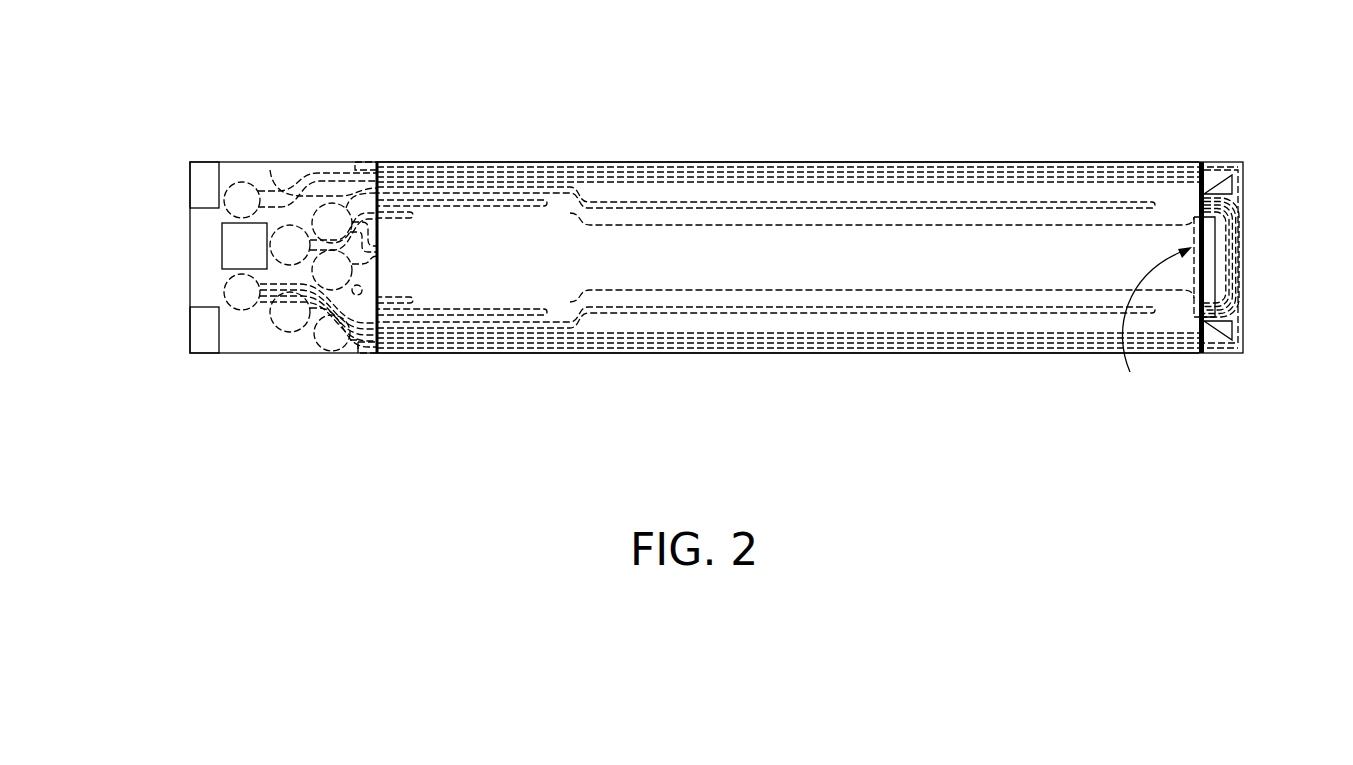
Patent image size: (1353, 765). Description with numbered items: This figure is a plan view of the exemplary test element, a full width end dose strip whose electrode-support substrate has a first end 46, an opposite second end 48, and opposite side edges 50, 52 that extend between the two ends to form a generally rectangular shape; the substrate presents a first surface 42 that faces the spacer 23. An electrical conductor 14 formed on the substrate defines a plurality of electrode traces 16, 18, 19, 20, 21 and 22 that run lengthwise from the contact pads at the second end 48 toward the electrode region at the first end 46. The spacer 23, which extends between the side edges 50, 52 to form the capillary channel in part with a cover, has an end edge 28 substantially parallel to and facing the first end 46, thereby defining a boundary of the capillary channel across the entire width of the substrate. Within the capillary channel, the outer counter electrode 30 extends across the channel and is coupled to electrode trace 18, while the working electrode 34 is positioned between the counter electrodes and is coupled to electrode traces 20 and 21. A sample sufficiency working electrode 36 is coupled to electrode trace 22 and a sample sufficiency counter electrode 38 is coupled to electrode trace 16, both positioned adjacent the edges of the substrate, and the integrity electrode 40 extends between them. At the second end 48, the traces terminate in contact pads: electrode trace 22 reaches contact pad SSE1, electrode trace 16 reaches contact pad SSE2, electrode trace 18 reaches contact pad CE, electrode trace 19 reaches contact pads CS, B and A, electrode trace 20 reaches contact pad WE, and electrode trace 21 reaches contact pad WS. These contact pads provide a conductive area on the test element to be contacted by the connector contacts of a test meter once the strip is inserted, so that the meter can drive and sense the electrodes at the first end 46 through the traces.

The electrical conductor 14 is at (763, 192).
The electrode trace 16 is at (1043, 363).
The electrode trace 18 is at (993, 352).
The electrode trace 19 is at (928, 330).
The electrode trace 20 is at (917, 204).
The electrode trace 21 is at (997, 180).
The electrode trace 22 is at (1074, 163).
The spacer 23 is at (1157, 324).
The end edge 28 is at (1205, 168).
The outer counter electrode 30 is at (1240, 243).
The working electrode 34 is at (1238, 262).
The sample sufficiency working electrode (SSWE) 36 is at (1243, 178).
The sample sufficiency counter electrode (SSCE) 38 is at (1243, 345).
The integrity electrode 40 is at (1243, 300).
The first surface 42 is at (1243, 325).
The first end 46 is at (1243, 215).
The second end 48 is at (190, 258).
The side edge 50 is at (470, 165).
The side edge 52 is at (520, 355).
The contact pad SSE1 is at (275, 183).
The contact pad SSE2 is at (321, 335).
The contact pad WE is at (315, 218).
The contact pad WS is at (224, 200).
The contact pad A is at (270, 247).
The contact pad CS is at (224, 293).
The contact pad CE is at (277, 318).
The contact pad B is at (338, 283).